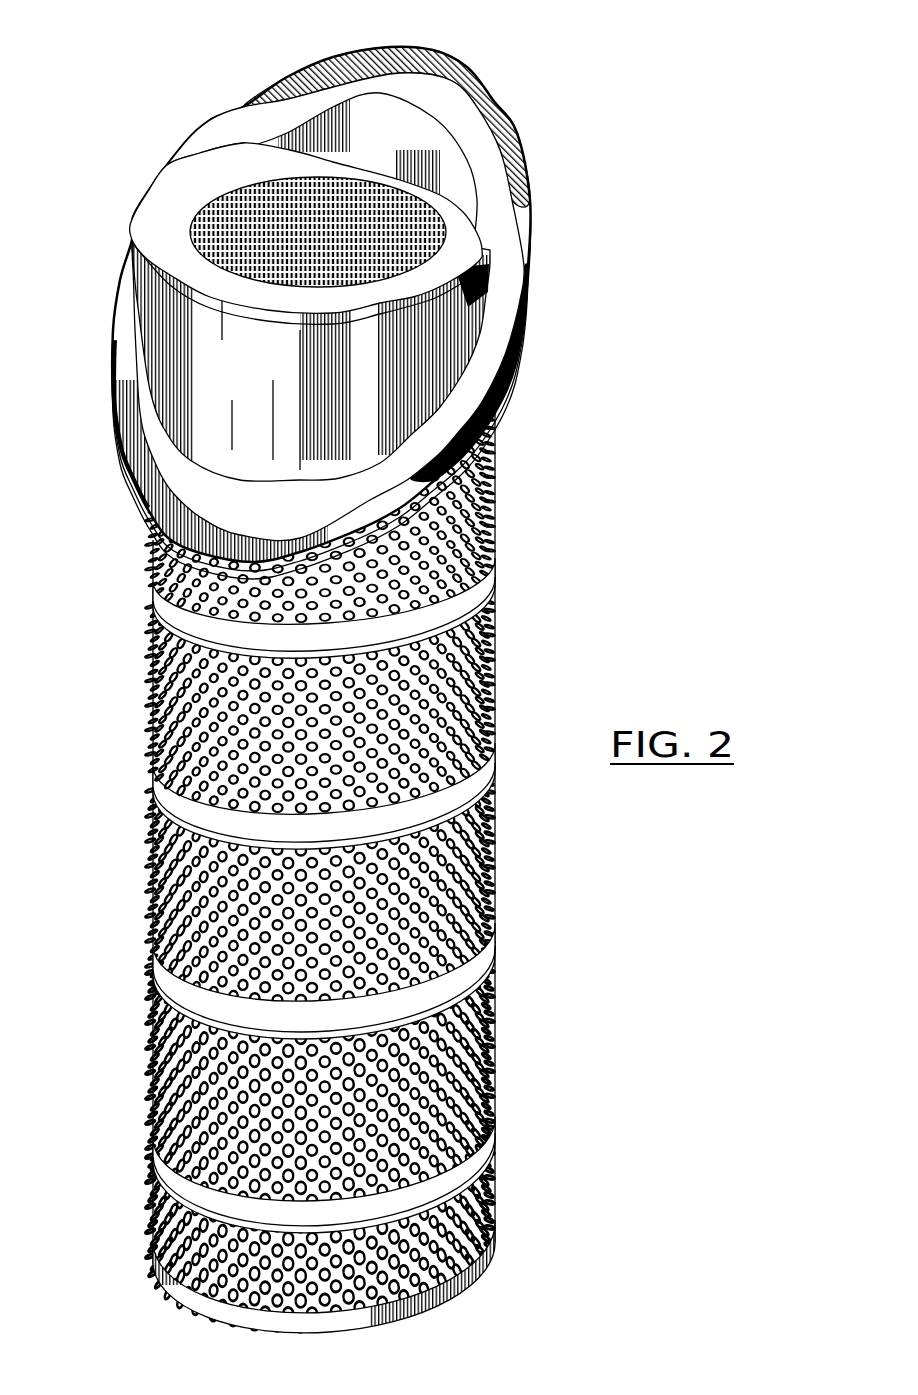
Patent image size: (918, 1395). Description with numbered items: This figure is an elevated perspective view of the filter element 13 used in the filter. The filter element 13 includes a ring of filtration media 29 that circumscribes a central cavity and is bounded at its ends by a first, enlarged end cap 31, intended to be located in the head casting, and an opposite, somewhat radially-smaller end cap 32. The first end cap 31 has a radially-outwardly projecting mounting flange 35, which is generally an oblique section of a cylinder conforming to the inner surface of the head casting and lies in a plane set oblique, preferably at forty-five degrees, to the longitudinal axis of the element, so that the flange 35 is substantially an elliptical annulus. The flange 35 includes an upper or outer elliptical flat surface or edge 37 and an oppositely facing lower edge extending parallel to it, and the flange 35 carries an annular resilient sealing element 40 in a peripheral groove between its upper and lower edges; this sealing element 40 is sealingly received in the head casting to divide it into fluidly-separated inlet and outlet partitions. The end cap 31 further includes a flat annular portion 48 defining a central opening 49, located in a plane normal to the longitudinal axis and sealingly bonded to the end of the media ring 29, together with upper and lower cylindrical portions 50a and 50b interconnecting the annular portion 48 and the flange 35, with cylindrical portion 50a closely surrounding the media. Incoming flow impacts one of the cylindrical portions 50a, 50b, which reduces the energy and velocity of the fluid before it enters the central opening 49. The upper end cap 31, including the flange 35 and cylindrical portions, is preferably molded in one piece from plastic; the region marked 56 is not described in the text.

The filter element 13 is at (486, 541).
The ring of filtration media 29 is at (152, 680).
The first end cap 31 is at (132, 210).
The second end cap 32 is at (183, 1297).
The mounting flange 35 is at (530, 200).
The upper elliptical flat surface 37 is at (497, 147).
The annular resilient sealing element 40 is at (150, 545).
The flat annular portion 48 is at (190, 182).
The central opening 49 is at (262, 177).
The upper cylindrical portion 50a is at (193, 337).
The lower cylindrical portion 50b is at (390, 108).
The sectioned rim portion 56 is at (437, 45).